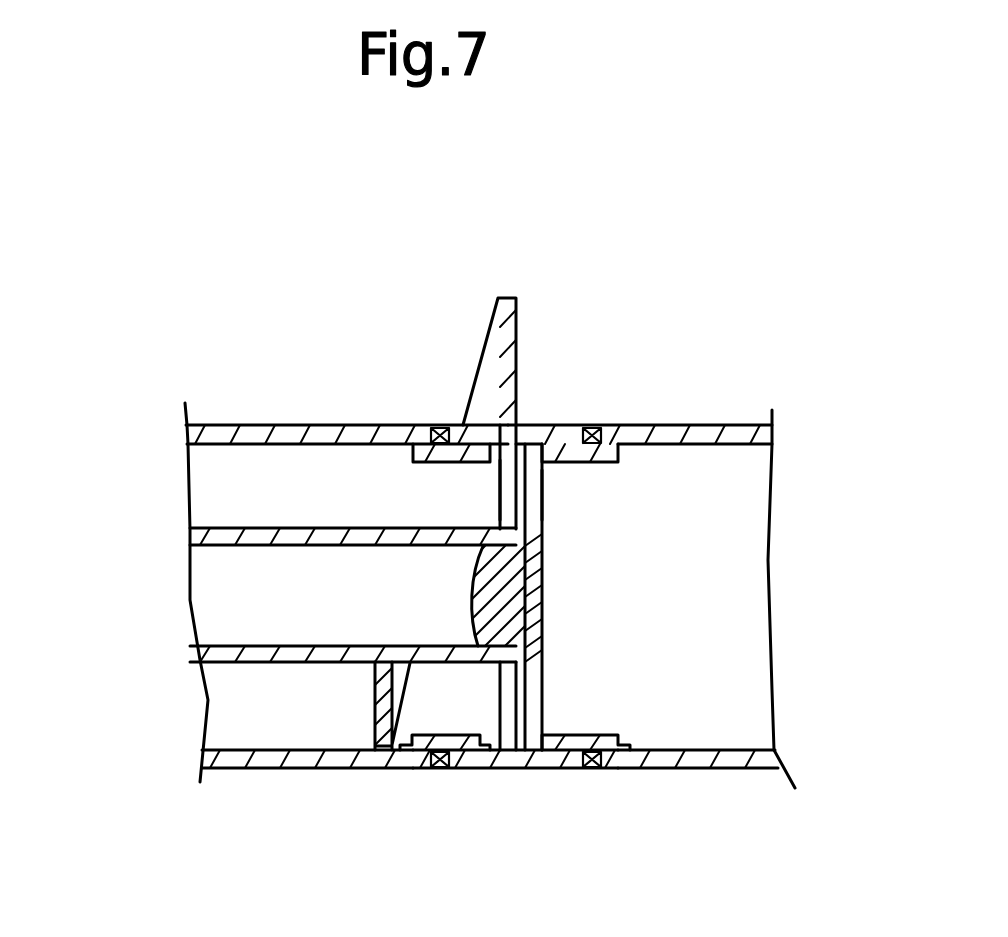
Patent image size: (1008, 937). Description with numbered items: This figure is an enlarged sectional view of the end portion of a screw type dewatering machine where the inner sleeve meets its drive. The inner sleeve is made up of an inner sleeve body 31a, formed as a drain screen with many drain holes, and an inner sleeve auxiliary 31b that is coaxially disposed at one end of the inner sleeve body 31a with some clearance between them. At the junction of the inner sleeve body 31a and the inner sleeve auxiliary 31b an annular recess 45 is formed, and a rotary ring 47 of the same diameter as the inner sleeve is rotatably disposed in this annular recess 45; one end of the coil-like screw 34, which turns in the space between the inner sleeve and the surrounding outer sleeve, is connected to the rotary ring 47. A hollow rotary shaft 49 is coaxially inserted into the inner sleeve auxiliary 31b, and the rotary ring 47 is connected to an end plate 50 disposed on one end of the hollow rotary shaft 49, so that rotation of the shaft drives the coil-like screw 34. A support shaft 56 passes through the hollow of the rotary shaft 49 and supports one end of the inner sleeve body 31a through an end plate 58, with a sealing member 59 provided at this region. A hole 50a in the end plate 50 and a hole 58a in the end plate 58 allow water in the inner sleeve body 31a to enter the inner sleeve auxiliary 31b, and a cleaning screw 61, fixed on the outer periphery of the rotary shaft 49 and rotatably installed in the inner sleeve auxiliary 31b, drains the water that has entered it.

The inner sleeve body 31a is at (715, 424).
The inner sleeve auxiliary 31b is at (260, 424).
The coil-like screw 34 is at (517, 332).
The annular recess 45 is at (555, 769).
The rotary ring 47 is at (562, 424).
The hollow rotary shaft 49 is at (232, 527).
The end plate 50 is at (497, 498).
The hole 50a is at (499, 488).
The support shaft 56 is at (228, 612).
The end plate 58 is at (549, 545).
The hole 58a is at (543, 498).
The sealing member 59 is at (438, 424).
The cleaning screw 61 is at (376, 702).